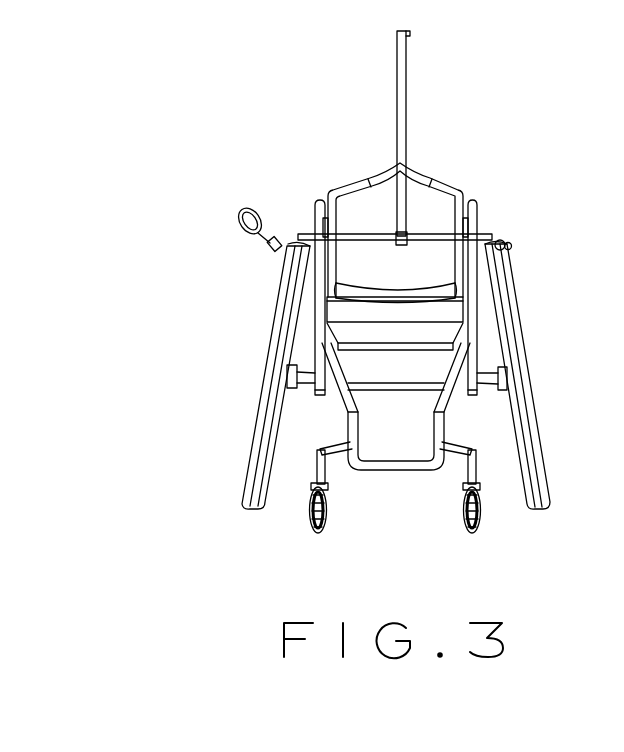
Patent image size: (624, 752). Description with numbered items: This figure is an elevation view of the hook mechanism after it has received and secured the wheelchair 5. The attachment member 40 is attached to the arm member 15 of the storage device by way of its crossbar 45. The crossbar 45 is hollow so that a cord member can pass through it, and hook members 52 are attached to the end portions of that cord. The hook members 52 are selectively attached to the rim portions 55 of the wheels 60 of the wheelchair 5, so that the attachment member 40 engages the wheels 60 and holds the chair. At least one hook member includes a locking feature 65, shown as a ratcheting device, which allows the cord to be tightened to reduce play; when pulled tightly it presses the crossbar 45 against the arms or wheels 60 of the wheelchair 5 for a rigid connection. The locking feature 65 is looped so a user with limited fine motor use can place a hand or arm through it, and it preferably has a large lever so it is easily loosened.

The wheelchair 5 is at (336, 423).
The arm member 15 is at (402, 100).
The attachment member 40 is at (308, 220).
The crossbar 45 is at (439, 236).
The hook members 52 is at (510, 240).
The rim portions 55 is at (283, 305).
The wheels 60 is at (513, 378).
The locking feature 65 is at (266, 252).